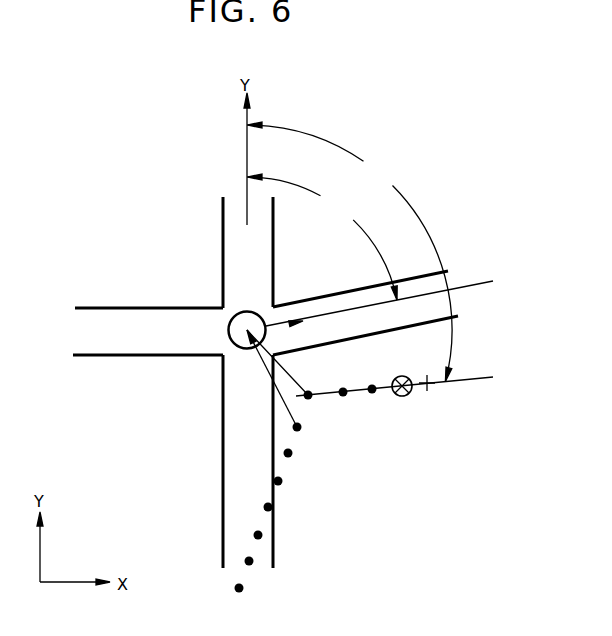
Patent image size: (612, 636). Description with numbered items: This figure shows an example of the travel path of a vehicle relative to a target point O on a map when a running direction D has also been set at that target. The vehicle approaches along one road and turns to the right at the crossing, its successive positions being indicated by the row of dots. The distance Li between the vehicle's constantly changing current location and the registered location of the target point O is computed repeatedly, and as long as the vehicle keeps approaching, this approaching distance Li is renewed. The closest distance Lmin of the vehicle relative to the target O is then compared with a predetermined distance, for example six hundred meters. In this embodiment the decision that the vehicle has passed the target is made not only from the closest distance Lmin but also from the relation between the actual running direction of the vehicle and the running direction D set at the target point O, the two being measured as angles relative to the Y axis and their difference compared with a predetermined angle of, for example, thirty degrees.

The target point O is at (247, 319).
The running direction D is at (379, 314).
The closest distance Lmin is at (370, 365).
The approaching distance Li is at (268, 461).